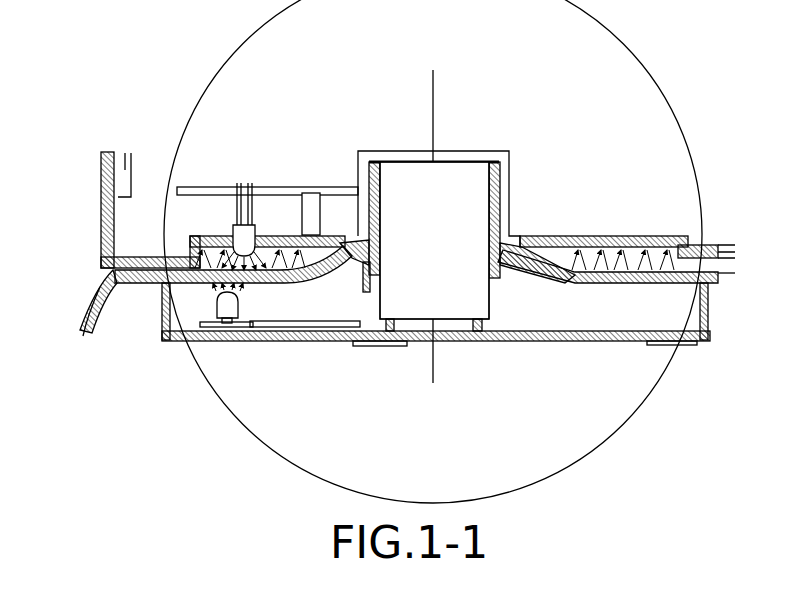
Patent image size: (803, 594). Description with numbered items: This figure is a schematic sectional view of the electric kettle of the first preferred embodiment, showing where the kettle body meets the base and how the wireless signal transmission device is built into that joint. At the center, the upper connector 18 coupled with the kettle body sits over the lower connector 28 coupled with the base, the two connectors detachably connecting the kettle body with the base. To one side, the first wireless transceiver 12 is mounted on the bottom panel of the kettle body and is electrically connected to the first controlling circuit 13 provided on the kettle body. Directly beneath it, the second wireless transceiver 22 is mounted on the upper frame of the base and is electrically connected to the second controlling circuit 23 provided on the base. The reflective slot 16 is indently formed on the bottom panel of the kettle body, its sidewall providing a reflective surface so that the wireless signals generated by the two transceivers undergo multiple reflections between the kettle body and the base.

The first wireless transceiver 12 is at (240, 212).
The first controlling circuit 13 is at (290, 190).
The reflective slot 16 is at (607, 280).
The upper connector 18 is at (503, 189).
The second wireless transceiver 22 is at (226, 307).
The second controlling circuit 23 is at (265, 335).
The lower connector 28 is at (490, 226).